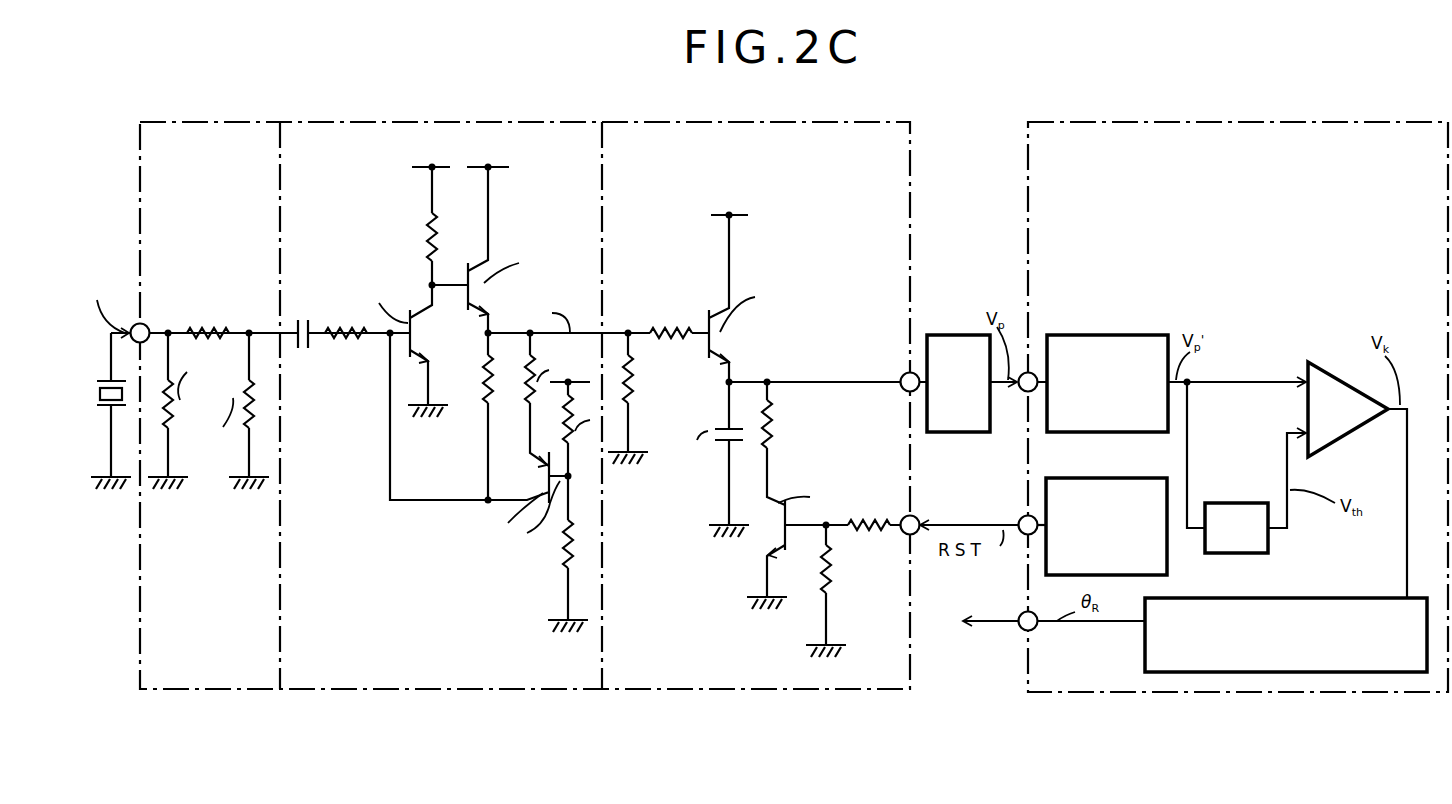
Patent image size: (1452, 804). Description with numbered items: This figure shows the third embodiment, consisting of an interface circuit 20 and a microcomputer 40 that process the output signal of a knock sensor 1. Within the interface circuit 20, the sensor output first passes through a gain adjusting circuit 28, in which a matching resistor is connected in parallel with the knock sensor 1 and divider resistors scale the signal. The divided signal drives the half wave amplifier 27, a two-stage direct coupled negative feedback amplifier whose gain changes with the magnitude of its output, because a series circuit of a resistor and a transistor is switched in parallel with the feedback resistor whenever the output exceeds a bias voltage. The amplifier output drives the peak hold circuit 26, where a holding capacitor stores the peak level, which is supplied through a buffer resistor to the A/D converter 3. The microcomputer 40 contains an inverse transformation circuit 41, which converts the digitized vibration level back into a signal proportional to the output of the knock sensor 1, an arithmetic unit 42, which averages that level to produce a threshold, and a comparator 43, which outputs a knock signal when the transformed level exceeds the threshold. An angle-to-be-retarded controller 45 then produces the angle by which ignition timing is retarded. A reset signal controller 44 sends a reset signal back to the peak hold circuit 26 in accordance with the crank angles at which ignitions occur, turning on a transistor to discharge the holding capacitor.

The knock sensor 1 is at (96, 398).
The A/D converter 3 is at (945, 335).
The interface circuit 20 is at (620, 111).
The peak hold circuit 26 is at (772, 689).
The half wave amplifier 27 is at (450, 689).
The gain adjusting circuit 28 is at (237, 436).
The microcomputer 40 is at (1065, 692).
The inverse transformation circuit 41 is at (1087, 335).
The arithmetic unit 42 is at (1222, 503).
The comparator 43 is at (1327, 370).
The reset signal controller 44 is at (1080, 478).
The angle-to-be-retarded controller 45 is at (1250, 598).